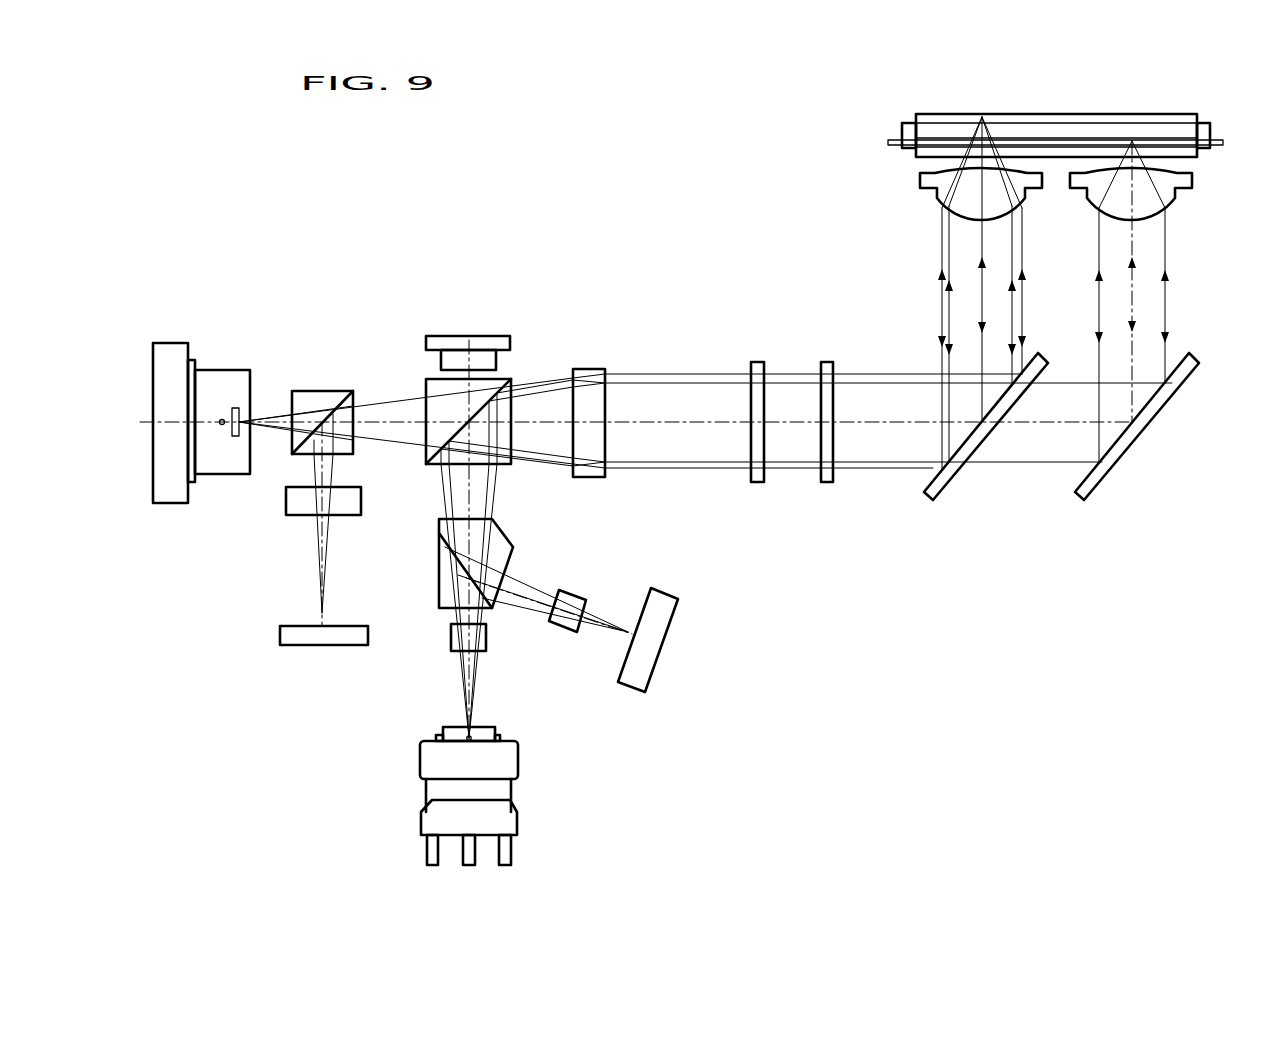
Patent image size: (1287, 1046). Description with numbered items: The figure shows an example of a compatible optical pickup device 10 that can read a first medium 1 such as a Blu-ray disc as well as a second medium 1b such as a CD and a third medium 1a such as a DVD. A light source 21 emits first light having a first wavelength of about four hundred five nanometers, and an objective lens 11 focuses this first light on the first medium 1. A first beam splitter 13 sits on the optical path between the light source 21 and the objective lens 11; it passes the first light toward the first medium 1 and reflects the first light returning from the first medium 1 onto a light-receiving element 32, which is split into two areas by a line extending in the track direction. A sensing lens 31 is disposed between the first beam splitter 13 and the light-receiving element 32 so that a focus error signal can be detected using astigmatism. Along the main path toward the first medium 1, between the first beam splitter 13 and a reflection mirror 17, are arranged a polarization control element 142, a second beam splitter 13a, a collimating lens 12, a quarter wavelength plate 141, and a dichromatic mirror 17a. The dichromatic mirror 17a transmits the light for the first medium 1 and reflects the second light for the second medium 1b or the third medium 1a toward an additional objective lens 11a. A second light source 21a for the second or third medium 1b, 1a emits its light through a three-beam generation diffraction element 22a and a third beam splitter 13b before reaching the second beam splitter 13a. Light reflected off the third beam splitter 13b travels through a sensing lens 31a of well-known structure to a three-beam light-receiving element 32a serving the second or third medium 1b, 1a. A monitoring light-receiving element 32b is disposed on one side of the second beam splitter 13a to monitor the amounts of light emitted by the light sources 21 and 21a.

The first medium 1 is at (1224, 142).
The third medium 1a is at (1211, 130).
The second medium 1b is at (1198, 113).
The compatible optical pickup device 10 is at (677, 275).
The objective lens 11 is at (1192, 180).
The additional objective lens 11a is at (919, 178).
The collimating lens 12 is at (587, 368).
The first beam splitter 13 is at (325, 391).
The second beam splitter 13a is at (513, 378).
The third beam splitter 13b is at (514, 547).
The quarter wavelength plate 141 is at (827, 362).
The polarization control element 142 is at (757, 362).
The reflection mirror 17 is at (1107, 477).
The dichromatic mirror 17a is at (952, 478).
The light source 21 is at (224, 370).
The light source for second or third medium 21a is at (518, 762).
The 3-beam generation diffraction element 22a is at (451, 636).
The sensing lens 31 is at (287, 502).
The sensing lens 31a is at (578, 590).
The light-receiving element 32 is at (280, 637).
The 3-beam light-receiving element 32a is at (668, 590).
The monitoring light-receiving element 32b is at (469, 337).